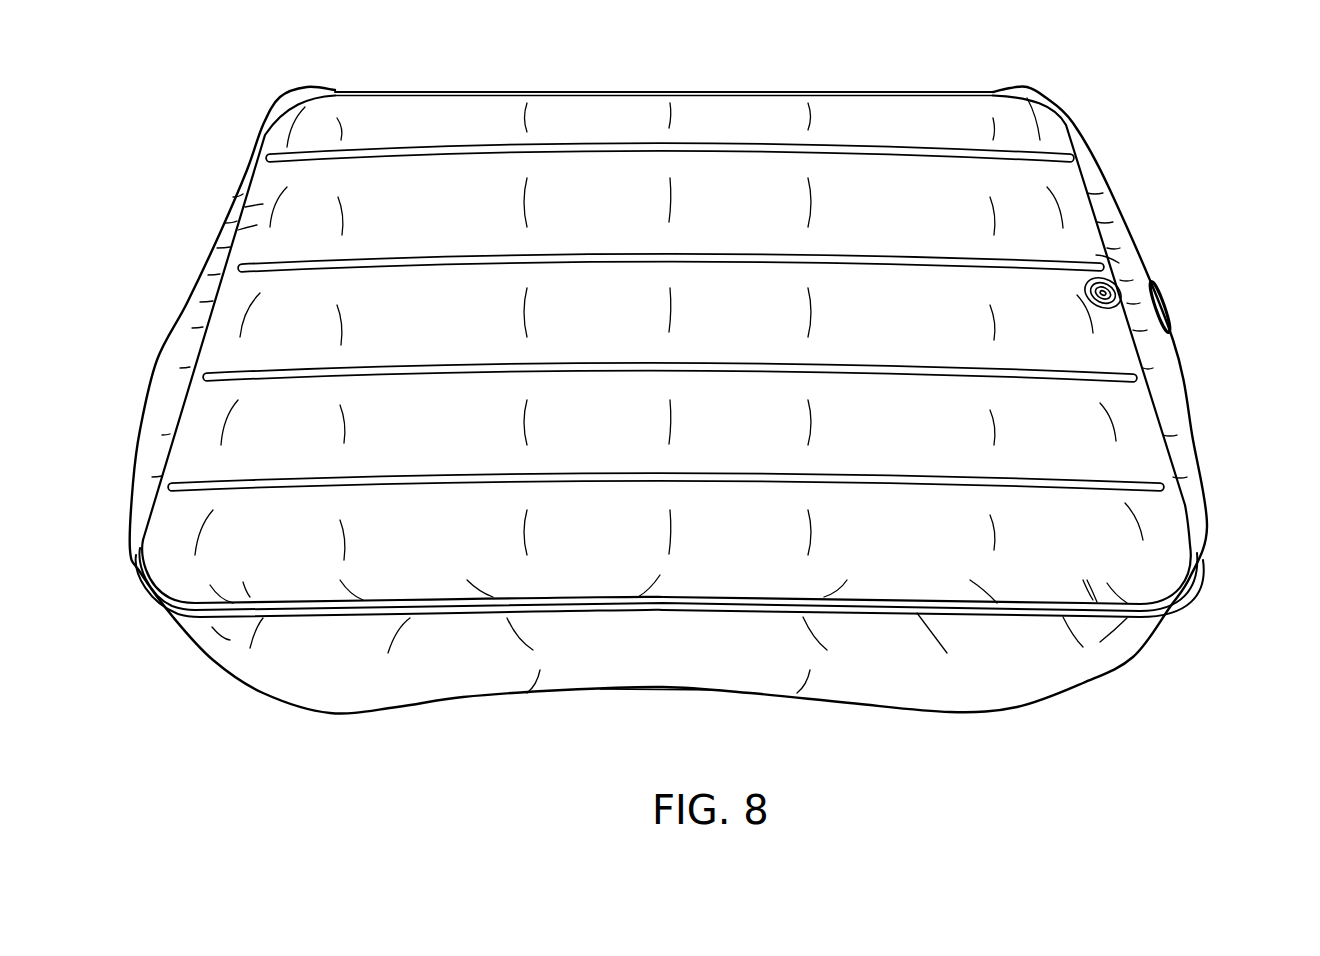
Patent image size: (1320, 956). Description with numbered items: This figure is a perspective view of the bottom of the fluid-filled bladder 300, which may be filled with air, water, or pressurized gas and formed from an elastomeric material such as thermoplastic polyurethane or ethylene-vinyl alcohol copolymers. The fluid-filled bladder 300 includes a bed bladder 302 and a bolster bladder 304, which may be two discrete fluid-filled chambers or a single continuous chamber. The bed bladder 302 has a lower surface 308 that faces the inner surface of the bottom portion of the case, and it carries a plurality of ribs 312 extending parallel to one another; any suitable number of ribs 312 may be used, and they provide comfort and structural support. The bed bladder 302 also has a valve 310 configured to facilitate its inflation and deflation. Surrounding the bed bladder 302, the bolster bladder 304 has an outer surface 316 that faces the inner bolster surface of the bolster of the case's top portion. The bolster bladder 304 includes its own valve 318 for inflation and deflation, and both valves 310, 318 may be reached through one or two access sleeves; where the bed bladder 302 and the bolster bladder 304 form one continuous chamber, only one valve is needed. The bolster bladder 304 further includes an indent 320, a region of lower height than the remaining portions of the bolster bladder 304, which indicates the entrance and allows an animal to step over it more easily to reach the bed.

The fluid-filled bladder 300 is at (1082, 88).
The bed bladder 302 is at (1153, 557).
The bolster bladder 304 is at (1030, 680).
The lower surface 308 is at (432, 555).
The valve 310 is at (1113, 280).
The ribs 312 is at (642, 135).
The outer surface 316 is at (1183, 447).
The valve 318 is at (1165, 305).
The indent 320 is at (687, 700).